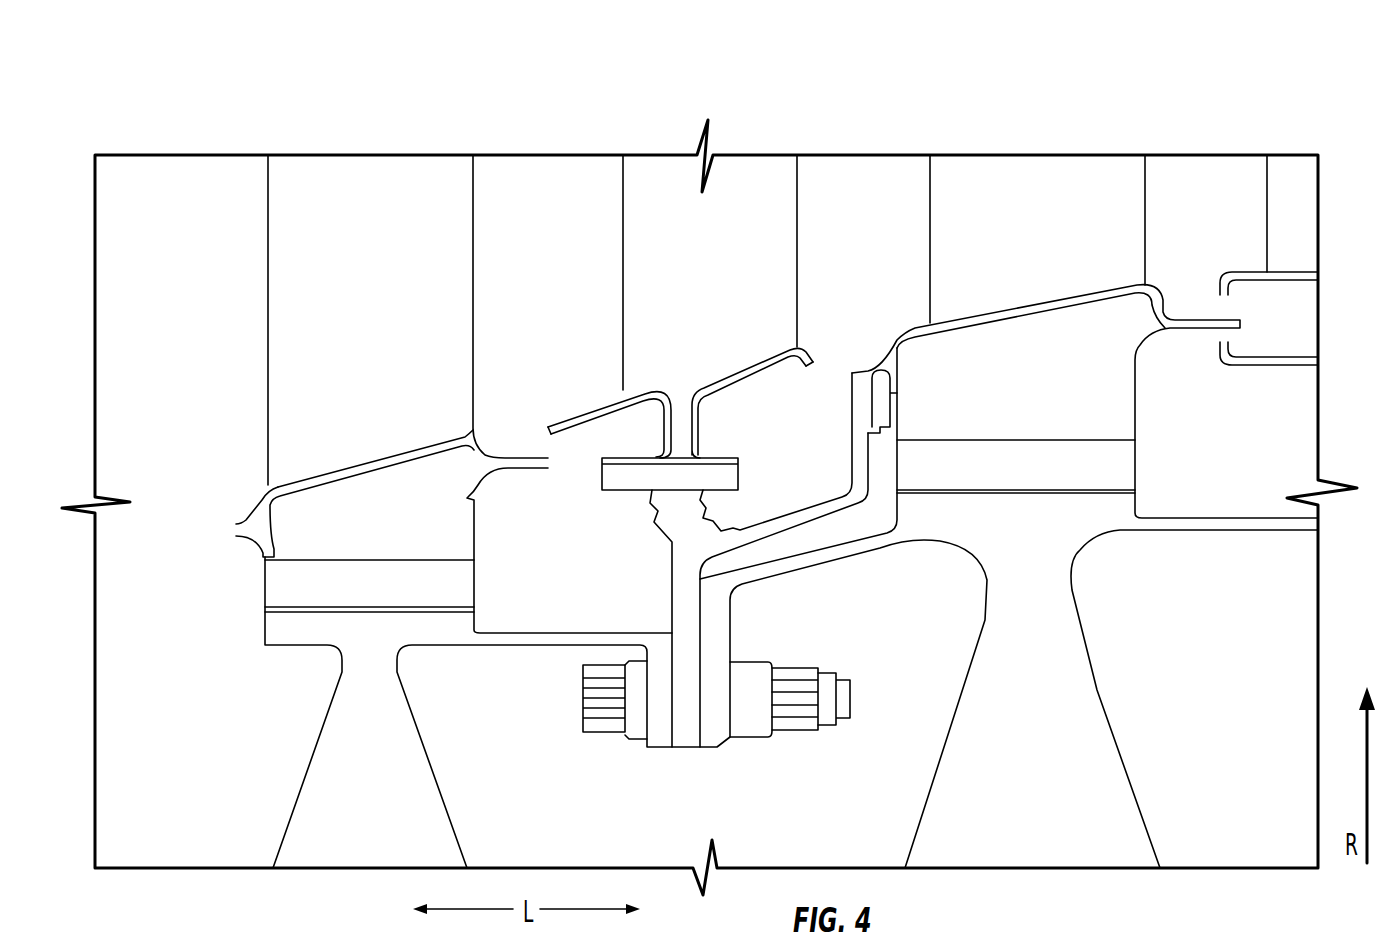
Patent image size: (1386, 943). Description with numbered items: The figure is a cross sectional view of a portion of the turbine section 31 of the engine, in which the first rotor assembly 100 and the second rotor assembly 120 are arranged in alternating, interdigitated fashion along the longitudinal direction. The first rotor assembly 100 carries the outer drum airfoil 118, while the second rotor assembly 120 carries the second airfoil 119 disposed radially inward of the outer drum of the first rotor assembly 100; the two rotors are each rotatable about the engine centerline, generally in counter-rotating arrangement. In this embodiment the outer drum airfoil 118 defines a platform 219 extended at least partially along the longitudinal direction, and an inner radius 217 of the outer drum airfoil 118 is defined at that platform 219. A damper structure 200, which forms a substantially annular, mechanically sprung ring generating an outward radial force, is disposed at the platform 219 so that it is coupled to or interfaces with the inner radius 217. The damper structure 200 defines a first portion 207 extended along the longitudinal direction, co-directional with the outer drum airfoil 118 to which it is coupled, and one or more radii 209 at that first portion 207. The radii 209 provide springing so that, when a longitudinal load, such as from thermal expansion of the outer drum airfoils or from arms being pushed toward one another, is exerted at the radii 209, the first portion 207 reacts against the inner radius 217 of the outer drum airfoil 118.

The turbine section 31 is at (985, 70).
The first rotor assembly 100 is at (790, 103).
The outer drum airfoil 118 is at (719, 267).
The second airfoil 119 is at (371, 323).
The second rotor assembly 120 is at (383, 738).
The damper structure 200 is at (590, 418).
The first portion 207 is at (756, 385).
The radii 209 is at (640, 414).
The inner radius 217 is at (726, 393).
The platform 219 is at (605, 400).